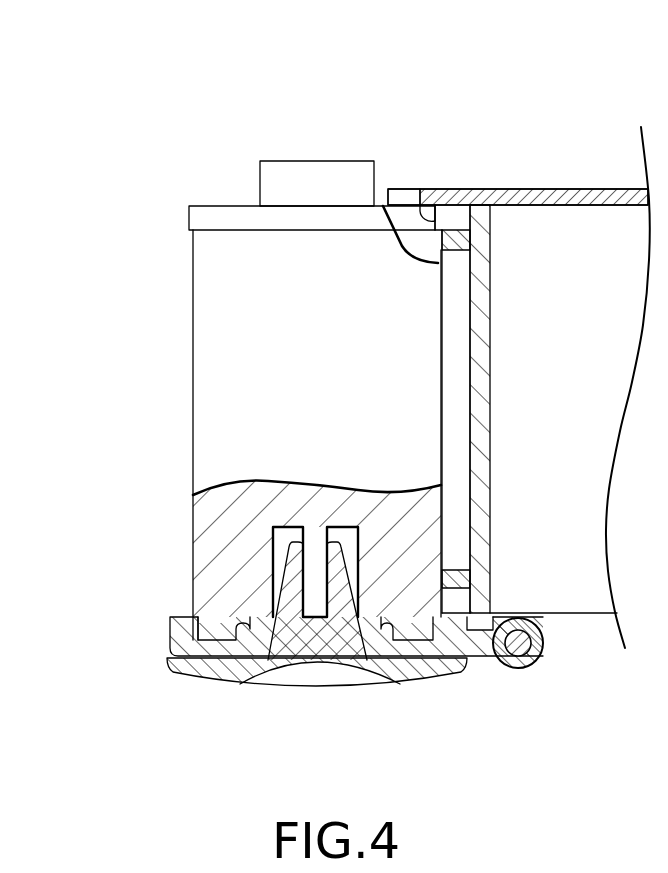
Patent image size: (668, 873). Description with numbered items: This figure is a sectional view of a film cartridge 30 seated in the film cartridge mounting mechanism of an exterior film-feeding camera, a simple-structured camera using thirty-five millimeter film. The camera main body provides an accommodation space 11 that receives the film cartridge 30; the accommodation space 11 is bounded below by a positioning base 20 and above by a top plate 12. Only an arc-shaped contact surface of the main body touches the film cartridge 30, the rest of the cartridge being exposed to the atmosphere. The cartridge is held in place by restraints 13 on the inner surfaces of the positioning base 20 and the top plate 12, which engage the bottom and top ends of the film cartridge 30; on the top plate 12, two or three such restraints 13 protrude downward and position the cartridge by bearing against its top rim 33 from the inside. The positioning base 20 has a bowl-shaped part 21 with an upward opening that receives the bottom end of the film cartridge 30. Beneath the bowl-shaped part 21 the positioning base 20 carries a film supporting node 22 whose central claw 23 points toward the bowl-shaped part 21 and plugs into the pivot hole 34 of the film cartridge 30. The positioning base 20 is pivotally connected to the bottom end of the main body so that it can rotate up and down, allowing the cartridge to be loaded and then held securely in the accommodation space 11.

The accommodation space 11 is at (455, 418).
The top plate 12 is at (402, 195).
The restraints 13 is at (426, 209).
The positioning base 20 is at (483, 697).
The bowl-shaped part 21 is at (213, 660).
The film supporting node 22 is at (408, 682).
The claw 23 is at (290, 578).
The film cartridge 30 is at (215, 320).
The top rim 33 is at (273, 525).
The pivot hole 34 is at (466, 187).